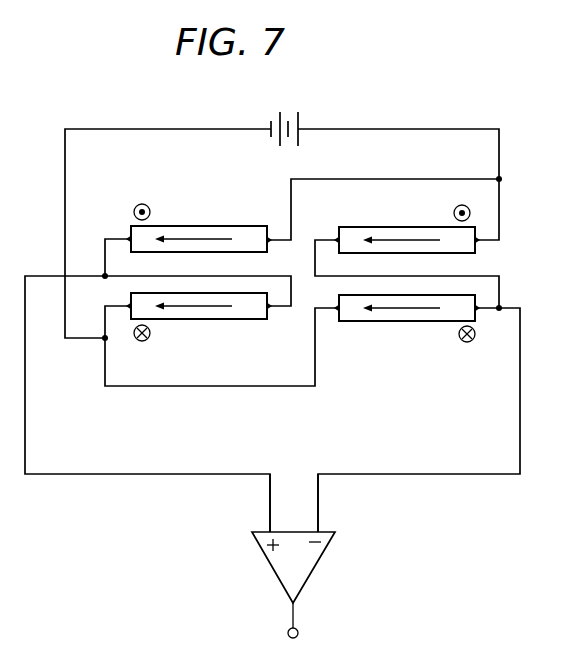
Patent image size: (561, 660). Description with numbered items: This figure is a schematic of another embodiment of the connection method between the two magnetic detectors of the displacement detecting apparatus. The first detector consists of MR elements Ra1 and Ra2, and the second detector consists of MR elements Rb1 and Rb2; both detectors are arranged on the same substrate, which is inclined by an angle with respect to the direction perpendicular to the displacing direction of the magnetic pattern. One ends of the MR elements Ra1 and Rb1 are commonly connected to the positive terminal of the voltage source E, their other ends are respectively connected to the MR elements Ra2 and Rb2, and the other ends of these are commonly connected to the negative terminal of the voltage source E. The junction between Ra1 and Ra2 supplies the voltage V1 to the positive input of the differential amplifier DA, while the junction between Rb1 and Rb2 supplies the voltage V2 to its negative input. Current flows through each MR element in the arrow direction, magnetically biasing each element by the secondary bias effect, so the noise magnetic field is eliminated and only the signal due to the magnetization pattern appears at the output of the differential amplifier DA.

The voltage source E is at (289, 112).
The MR element Ra1 is at (214, 226).
The MR element Ra2 is at (232, 320).
The MR element Rb1 is at (378, 227).
The MR element Rb2 is at (385, 322).
The differential amplifier DA is at (318, 562).
The first input voltage V1 is at (253, 503).
The second input voltage V2 is at (332, 503).